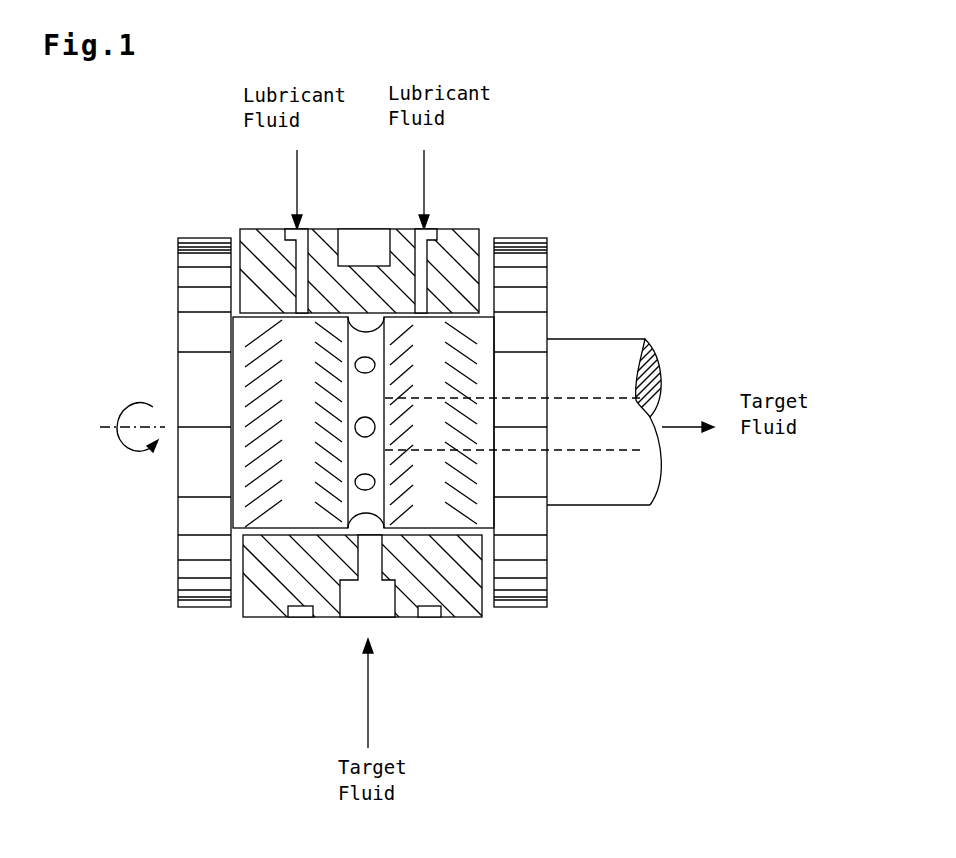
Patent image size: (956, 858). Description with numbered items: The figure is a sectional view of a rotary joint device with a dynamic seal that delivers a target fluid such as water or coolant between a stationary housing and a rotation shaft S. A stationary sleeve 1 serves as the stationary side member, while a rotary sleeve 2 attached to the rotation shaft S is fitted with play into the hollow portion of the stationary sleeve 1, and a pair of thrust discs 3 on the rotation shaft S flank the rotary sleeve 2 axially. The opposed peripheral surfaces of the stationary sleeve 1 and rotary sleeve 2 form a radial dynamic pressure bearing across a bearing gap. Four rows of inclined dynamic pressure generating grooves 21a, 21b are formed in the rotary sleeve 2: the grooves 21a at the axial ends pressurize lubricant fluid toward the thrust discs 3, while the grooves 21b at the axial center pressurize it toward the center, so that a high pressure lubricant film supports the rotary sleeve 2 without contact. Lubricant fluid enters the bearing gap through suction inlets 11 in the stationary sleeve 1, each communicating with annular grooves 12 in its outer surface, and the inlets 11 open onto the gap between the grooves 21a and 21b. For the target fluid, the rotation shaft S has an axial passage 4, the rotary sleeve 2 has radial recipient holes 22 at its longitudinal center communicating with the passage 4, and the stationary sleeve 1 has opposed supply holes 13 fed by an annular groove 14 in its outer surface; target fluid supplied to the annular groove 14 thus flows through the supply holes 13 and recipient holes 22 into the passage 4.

The stationary sleeve 1 is at (462, 228).
The rotary sleeve 2 is at (420, 510).
The thrust discs 3 is at (205, 237).
The passage 4 is at (600, 450).
The suction inlets 11 is at (300, 262).
The annular grooves 12 is at (305, 613).
The supply holes 13 is at (357, 550).
The annular groove 14 is at (360, 237).
The dynamic pressure generating grooves 21a is at (253, 403).
The dynamic pressure generating grooves 21b is at (323, 486).
The recipient holes 22 is at (370, 478).
The rotation shaft S is at (600, 339).